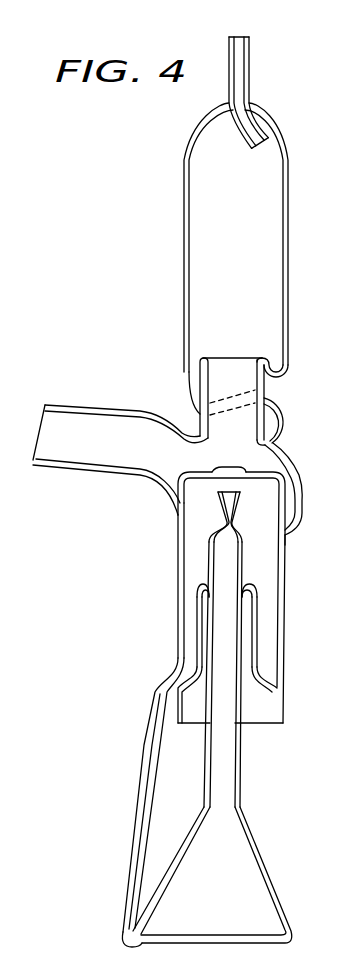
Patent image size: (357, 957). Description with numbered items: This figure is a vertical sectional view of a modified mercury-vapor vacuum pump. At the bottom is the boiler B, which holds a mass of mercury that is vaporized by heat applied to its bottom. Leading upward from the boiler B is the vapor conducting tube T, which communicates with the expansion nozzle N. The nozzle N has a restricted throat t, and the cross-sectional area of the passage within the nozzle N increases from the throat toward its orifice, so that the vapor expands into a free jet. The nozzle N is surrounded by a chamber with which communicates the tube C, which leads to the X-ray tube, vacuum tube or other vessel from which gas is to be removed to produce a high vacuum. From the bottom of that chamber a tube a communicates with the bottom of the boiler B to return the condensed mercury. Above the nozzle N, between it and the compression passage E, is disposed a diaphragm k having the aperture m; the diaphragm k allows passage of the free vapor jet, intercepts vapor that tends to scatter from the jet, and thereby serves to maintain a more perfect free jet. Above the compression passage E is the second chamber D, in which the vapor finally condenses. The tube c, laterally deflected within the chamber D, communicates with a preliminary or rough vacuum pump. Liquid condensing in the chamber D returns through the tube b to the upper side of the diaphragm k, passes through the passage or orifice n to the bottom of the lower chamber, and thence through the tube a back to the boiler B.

The tube c is at (250, 58).
The second chamber D is at (288, 238).
The tube b is at (187, 388).
The compression passage E is at (262, 383).
The tube C is at (120, 460).
The diaphragm k is at (268, 467).
The aperture m is at (222, 470).
The passage or orifice n is at (300, 513).
The restricted throat t is at (223, 522).
The expansion nozzle N is at (240, 507).
The vapor conducting tube T is at (240, 703).
The tube a is at (142, 783).
The boiler B is at (257, 848).